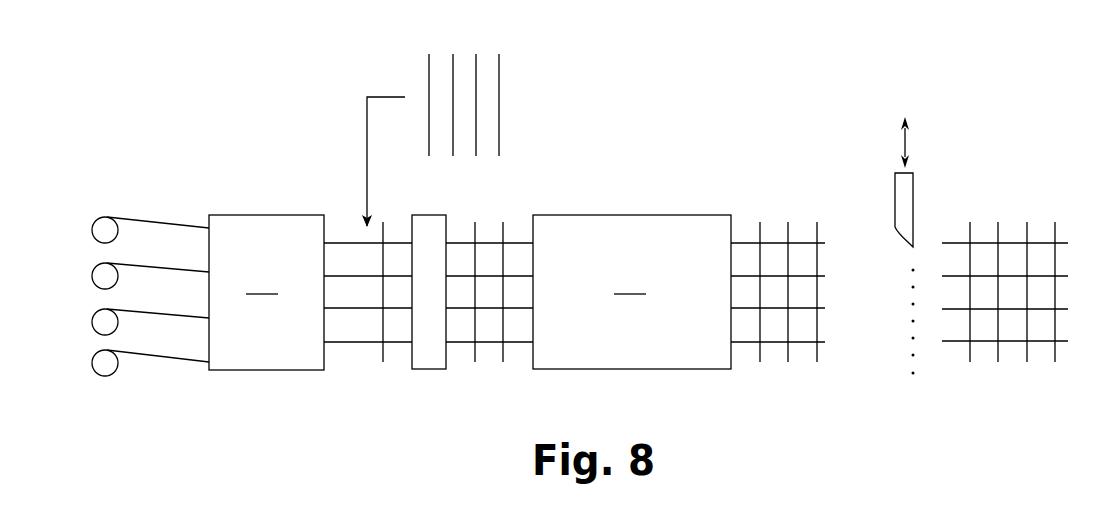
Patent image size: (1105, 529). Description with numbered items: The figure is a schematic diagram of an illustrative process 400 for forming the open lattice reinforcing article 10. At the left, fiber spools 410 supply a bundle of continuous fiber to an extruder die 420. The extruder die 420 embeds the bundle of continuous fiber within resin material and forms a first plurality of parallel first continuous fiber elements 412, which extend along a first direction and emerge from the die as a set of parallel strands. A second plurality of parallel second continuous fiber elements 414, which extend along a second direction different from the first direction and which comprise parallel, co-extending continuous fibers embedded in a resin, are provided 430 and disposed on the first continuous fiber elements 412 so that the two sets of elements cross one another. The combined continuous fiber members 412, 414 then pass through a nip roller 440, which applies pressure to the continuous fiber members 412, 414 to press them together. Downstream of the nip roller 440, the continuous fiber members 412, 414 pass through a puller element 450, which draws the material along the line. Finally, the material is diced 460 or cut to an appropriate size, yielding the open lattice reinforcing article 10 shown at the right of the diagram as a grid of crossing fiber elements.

The open lattice reinforcing article 10 is at (1022, 376).
The process 400 is at (697, 129).
The fiber spools 410 is at (86, 404).
The first continuous fiber elements 412 is at (345, 343).
The second continuous fiber elements 414 is at (499, 130).
The extruder die 420 is at (266, 292).
The second fiber element supply 430 is at (521, 100).
The nip roller 440 is at (427, 355).
The puller element 450 is at (679, 292).
The dicing element 460 is at (915, 200).